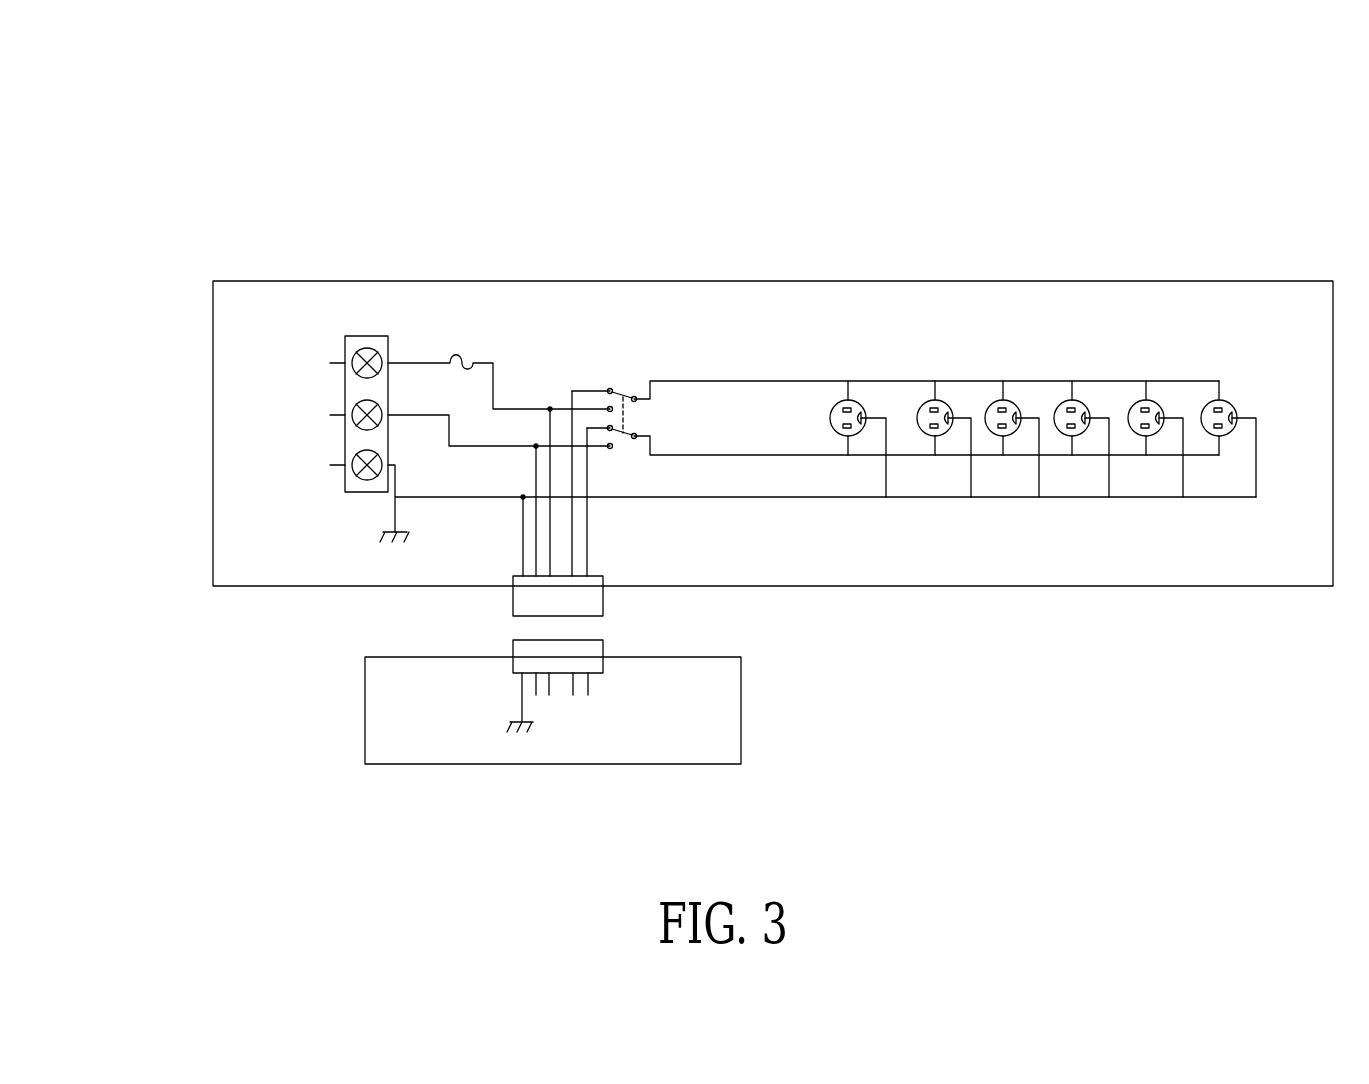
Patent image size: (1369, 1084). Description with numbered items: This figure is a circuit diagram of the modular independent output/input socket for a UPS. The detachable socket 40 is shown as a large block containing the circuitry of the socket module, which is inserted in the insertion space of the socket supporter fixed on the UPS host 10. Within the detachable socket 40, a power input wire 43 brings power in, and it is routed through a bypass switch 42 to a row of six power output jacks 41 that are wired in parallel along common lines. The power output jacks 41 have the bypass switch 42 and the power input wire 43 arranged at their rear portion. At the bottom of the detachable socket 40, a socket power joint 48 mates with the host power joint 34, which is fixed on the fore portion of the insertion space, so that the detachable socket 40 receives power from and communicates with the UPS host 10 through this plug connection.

The UPS host 10 is at (347, 738).
The host power joint 34 is at (513, 647).
The detachable socket 40 is at (508, 262).
The power output jacks 41 is at (917, 414).
The bypass switch 42 is at (627, 388).
The power input wire 43 is at (356, 395).
The connector 48 is at (603, 603).